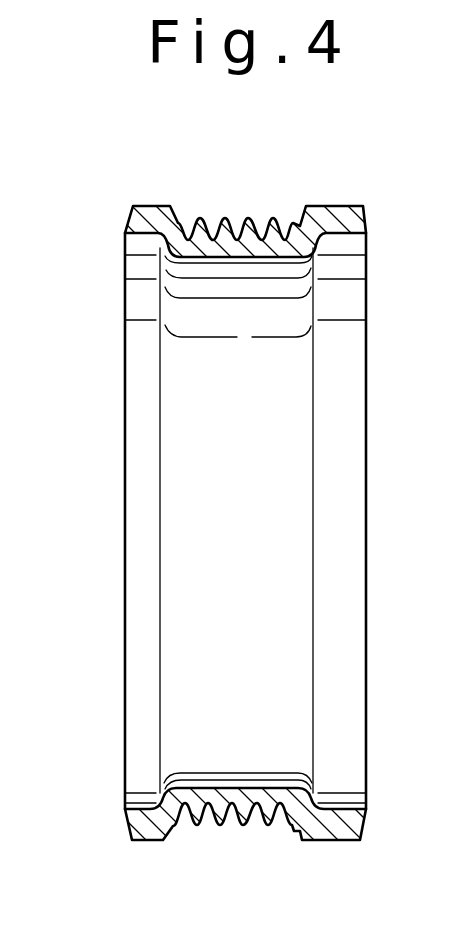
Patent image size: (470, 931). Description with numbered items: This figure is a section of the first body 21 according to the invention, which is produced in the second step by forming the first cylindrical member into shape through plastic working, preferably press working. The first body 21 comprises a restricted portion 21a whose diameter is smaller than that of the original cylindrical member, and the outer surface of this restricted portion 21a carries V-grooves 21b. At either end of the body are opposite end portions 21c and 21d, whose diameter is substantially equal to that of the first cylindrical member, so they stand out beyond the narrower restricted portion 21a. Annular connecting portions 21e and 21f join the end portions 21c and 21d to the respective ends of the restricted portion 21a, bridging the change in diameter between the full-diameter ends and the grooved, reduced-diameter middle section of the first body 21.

The first body 21 is at (324, 176).
The restricted portion 21a is at (242, 252).
The V-grooves 21b is at (262, 226).
The end portion 21c is at (138, 221).
The end portion 21d is at (358, 218).
The annular connecting portion 21e is at (184, 218).
The annular connecting portion 21f is at (302, 222).